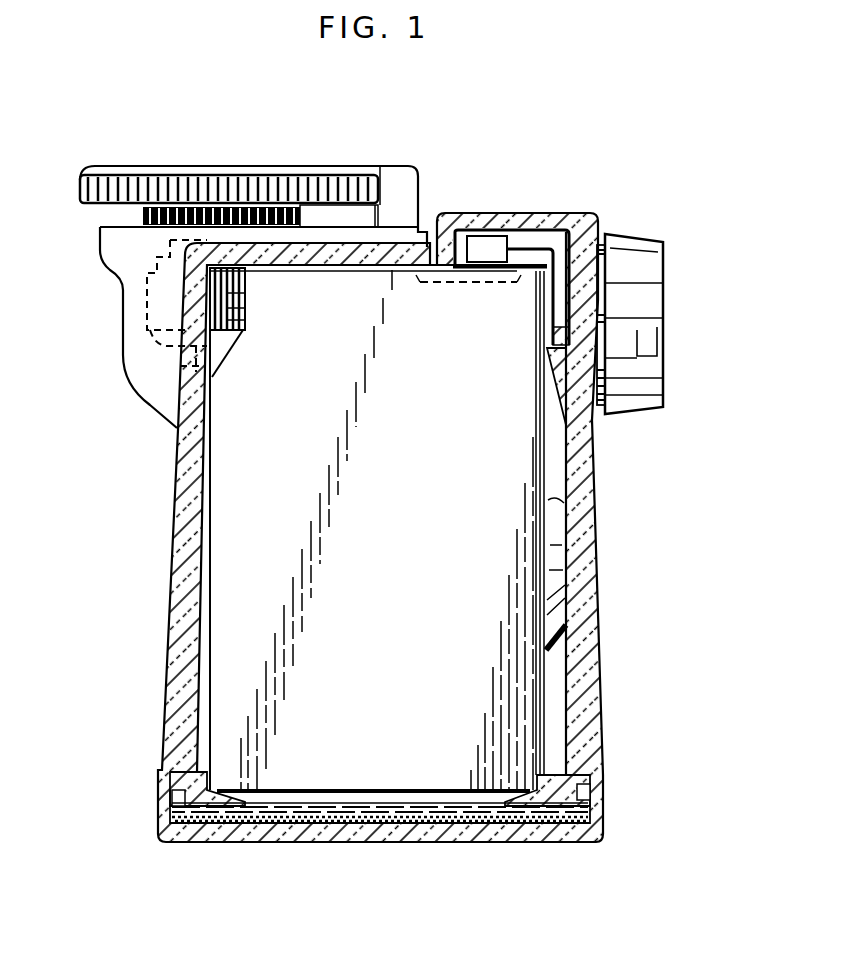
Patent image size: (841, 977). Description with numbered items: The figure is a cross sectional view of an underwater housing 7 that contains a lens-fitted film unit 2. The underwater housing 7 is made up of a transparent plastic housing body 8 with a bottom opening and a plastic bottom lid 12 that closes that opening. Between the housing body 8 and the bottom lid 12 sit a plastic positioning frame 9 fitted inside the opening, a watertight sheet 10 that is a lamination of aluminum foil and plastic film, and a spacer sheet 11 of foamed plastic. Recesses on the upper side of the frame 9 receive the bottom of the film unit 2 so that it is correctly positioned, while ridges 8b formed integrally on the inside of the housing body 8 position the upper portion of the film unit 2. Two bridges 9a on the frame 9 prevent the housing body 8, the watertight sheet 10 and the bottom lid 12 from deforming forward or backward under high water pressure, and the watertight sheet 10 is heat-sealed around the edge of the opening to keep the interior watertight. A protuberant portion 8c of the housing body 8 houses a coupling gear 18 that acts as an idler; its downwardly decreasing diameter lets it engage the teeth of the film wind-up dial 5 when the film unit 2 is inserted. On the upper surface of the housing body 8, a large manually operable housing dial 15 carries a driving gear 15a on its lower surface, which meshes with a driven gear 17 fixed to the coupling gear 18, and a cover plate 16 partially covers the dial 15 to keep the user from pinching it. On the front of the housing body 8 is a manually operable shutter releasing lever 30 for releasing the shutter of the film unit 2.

The lens-fitted film unit 2 is at (520, 460).
The film wind-up dial 5 is at (247, 304).
The underwater housing 7 is at (527, 192).
The housing body 8 is at (173, 579).
The ridges 8b is at (562, 393).
The protuberant portion 8c is at (121, 287).
The positioning frame 9 is at (553, 774).
The bridges 9a is at (356, 790).
The watertight sheet 10 is at (492, 845).
The spacer sheet 11 is at (416, 845).
The bottom lid 12 is at (262, 845).
The housing dial 15 is at (241, 183).
The driving gear 15a is at (300, 213).
The cover plate 16 is at (101, 165).
The driven gear 17 is at (143, 214).
The coupling gear 18 is at (238, 331).
The shutter releasing lever 30 is at (663, 310).